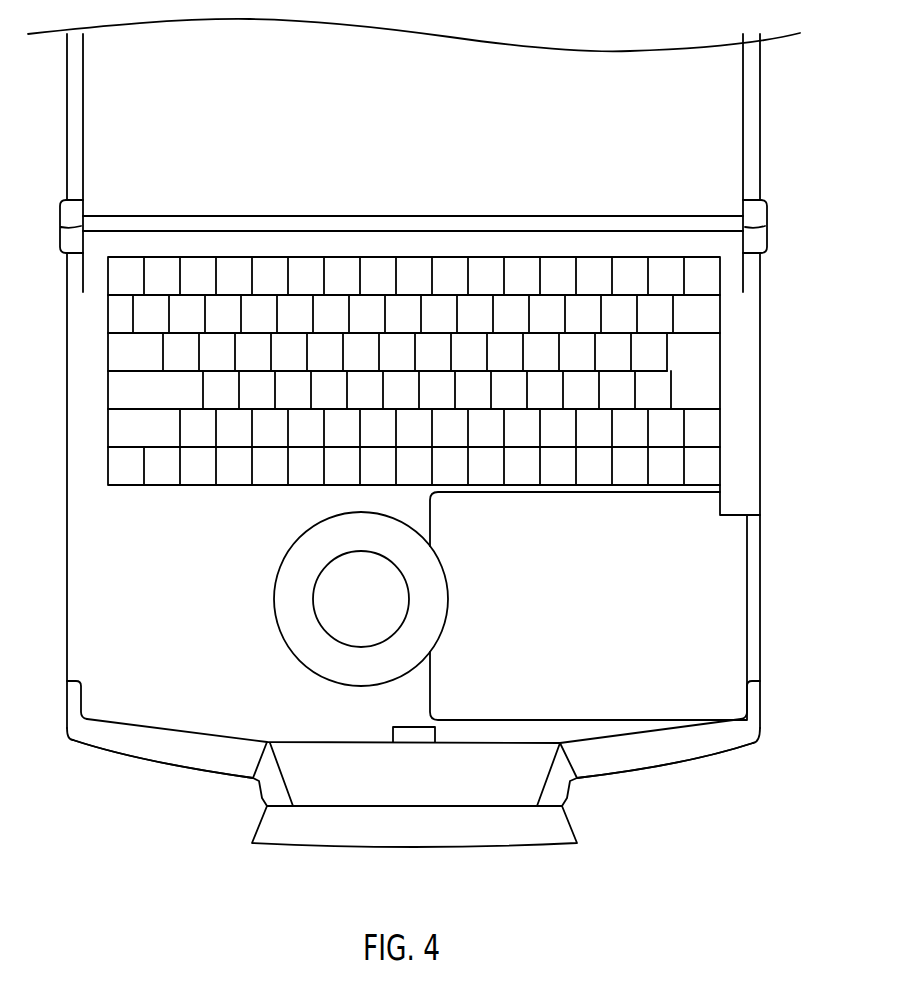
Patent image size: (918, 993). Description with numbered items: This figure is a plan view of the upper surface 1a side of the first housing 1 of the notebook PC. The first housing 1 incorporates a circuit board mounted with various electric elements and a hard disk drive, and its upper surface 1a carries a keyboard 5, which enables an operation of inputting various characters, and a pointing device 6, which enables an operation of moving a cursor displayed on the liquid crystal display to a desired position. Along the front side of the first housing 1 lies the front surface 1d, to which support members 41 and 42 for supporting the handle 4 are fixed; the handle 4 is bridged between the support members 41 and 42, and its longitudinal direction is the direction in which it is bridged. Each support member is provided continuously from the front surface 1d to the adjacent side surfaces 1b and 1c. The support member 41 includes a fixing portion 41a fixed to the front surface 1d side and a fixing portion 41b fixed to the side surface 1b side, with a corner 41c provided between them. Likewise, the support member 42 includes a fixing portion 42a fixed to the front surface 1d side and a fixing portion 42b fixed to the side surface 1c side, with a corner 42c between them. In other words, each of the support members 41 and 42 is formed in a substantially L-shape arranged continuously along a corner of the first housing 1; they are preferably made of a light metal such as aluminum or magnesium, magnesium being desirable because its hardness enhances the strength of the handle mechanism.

The first housing 1 is at (745, 443).
The upper surface 1a is at (692, 585).
The side surface 1b is at (60, 632).
The side surface 1c is at (770, 632).
The front surface 1d is at (340, 752).
The handle 4 is at (422, 830).
The support member 41 is at (177, 765).
The fixing portion 41a is at (114, 749).
The fixing portion 41b is at (73, 702).
The corner 41c is at (68, 748).
The support member 42 is at (657, 768).
The fixing portion 42a is at (713, 749).
The fixing portion 42b is at (758, 703).
The corner 42c is at (762, 748).
The keyboard 5 is at (700, 369).
The pointing device 6 is at (335, 596).